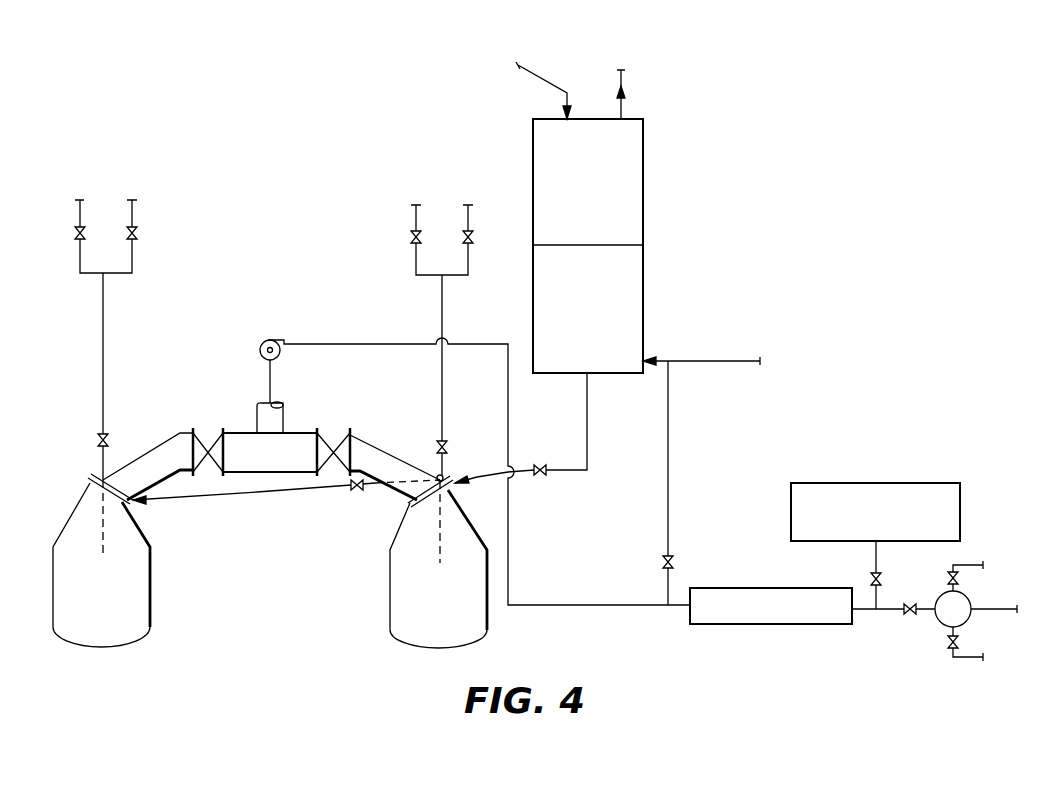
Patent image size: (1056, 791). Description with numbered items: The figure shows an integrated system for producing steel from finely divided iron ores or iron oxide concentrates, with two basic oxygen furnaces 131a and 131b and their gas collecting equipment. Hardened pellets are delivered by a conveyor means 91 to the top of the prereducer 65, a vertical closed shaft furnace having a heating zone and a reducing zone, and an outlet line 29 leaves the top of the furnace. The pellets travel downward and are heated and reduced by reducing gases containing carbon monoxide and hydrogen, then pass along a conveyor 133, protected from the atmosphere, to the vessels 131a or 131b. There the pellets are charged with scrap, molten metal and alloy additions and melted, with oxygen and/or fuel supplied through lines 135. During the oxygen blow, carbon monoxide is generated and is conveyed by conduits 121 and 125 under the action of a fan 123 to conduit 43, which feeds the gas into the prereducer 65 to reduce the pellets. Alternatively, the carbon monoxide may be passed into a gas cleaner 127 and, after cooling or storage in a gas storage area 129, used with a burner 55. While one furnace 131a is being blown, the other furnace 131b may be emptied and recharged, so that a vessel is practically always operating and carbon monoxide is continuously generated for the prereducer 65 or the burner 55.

The outlet line 29 is at (621, 108).
The conduit 43 is at (697, 361).
The burner 55 is at (940, 616).
The prereducer 65 is at (643, 160).
The conveyor means 91 is at (548, 82).
The conduit 121 is at (578, 622).
The fan 123 is at (274, 340).
The conduit 125 is at (668, 484).
The gas cleaner 127 is at (780, 624).
The gas storage area 129 is at (934, 483).
The basic oxygen furnace 131a is at (122, 627).
The basic oxygen furnace 131b is at (456, 627).
The conveyor 133 is at (218, 494).
The lines 135 is at (103, 302).